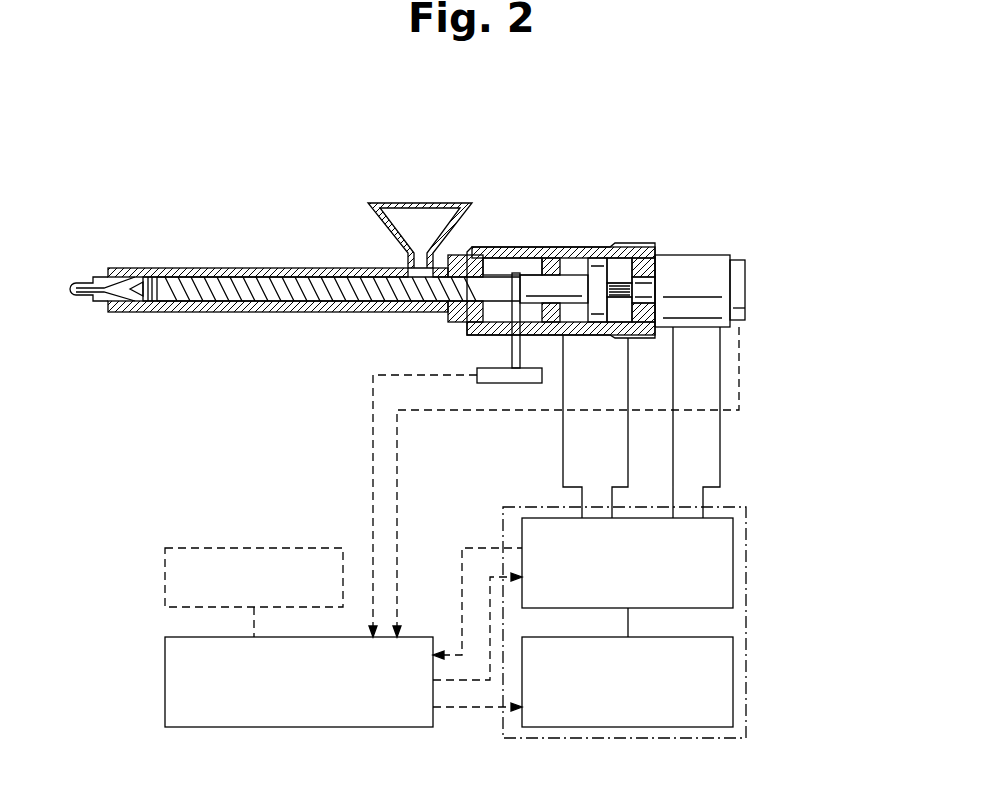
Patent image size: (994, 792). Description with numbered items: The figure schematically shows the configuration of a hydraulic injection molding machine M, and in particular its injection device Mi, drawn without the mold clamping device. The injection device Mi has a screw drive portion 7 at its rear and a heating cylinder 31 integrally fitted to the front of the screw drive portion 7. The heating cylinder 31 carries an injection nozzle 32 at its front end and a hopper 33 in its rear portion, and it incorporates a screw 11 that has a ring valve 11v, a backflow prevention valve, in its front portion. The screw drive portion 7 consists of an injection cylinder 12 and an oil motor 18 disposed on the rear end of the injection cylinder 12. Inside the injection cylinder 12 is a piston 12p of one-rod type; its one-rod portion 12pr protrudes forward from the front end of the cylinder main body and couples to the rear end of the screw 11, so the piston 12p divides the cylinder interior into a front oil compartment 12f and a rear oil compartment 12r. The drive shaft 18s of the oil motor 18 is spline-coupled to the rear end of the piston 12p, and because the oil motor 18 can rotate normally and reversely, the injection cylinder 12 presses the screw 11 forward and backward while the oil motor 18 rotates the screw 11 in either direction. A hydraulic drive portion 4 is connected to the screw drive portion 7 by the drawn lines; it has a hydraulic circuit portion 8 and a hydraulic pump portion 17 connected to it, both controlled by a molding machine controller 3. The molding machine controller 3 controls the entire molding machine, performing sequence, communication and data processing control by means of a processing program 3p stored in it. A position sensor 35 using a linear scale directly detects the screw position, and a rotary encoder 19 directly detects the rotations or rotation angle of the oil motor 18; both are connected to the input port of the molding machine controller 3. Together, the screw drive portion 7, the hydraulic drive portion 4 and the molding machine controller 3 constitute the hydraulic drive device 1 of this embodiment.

The hydraulic drive device 1 is at (761, 704).
The molding machine controller 3 is at (165, 668).
The processing program 3p is at (190, 546).
The hydraulic drive portion 4 is at (738, 503).
The screw drive portion 7 is at (650, 245).
The hydraulic circuit portion 8 is at (733, 556).
The screw 11 is at (240, 313).
The ring valve 11v is at (150, 272).
The injection cylinder 12 is at (600, 340).
The front oil compartment 12f is at (565, 258).
The piston 12p is at (573, 263).
The one-rod portion 12pr is at (535, 270).
The rear oil compartment 12r is at (618, 262).
The hydraulic pump portion 17 is at (733, 672).
The oil motor 18 is at (720, 254).
The drive shaft 18s is at (622, 280).
The rotary encoder 19 is at (745, 290).
The heating cylinder 31 is at (275, 268).
The injection nozzle 32 is at (82, 280).
The hopper 33 is at (373, 215).
The position sensor 35 is at (488, 368).
The hydraulic injection molding machine M is at (588, 138).
The injection device Mi is at (276, 166).